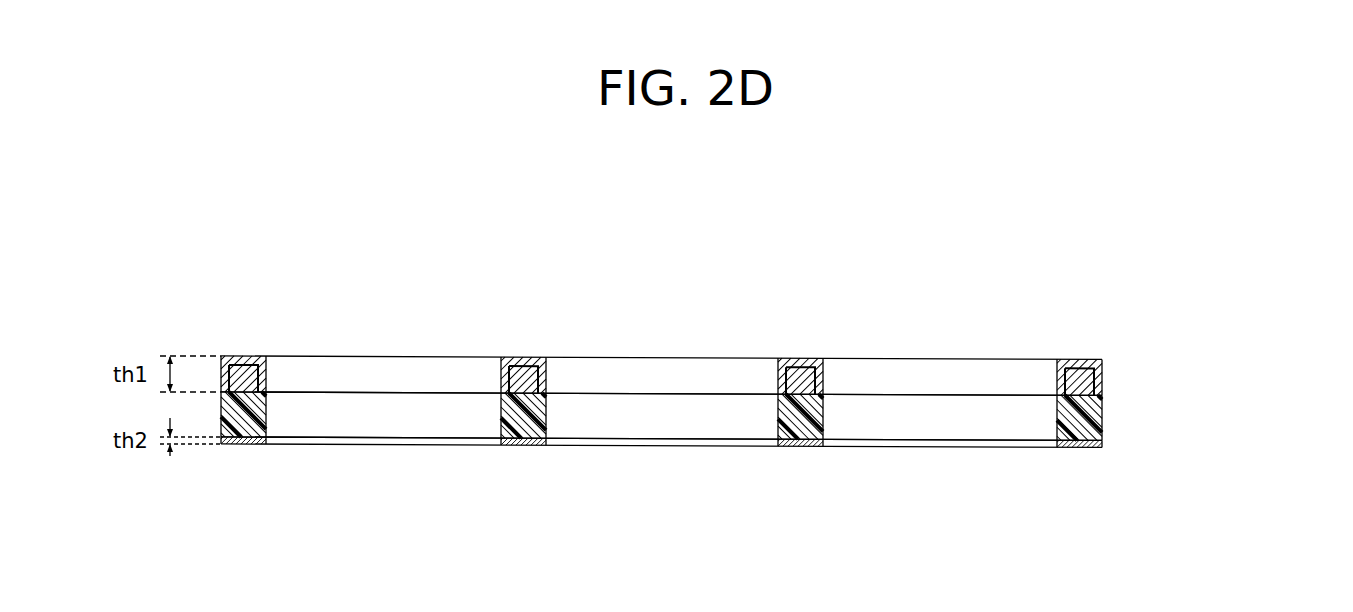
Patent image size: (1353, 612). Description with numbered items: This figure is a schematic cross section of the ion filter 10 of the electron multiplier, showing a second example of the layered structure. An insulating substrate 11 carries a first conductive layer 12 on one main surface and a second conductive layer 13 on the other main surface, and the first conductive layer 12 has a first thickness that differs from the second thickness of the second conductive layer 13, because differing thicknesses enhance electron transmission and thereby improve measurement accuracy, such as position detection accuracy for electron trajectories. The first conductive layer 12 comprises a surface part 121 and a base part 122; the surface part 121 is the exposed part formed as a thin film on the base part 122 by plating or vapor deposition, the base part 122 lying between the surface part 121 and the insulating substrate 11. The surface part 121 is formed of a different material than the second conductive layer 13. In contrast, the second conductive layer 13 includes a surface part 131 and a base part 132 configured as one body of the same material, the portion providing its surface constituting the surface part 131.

The ion filter 10 is at (1046, 264).
The insulating substrate 11 is at (1102, 420).
The first conductive layer 12 is at (1198, 336).
The surface part 121 is at (1101, 360).
The base part 122 is at (1094, 383).
The second conductive layer 13 is at (753, 472).
The surface part 131 is at (661, 442).
The base part 132 is at (1102, 445).